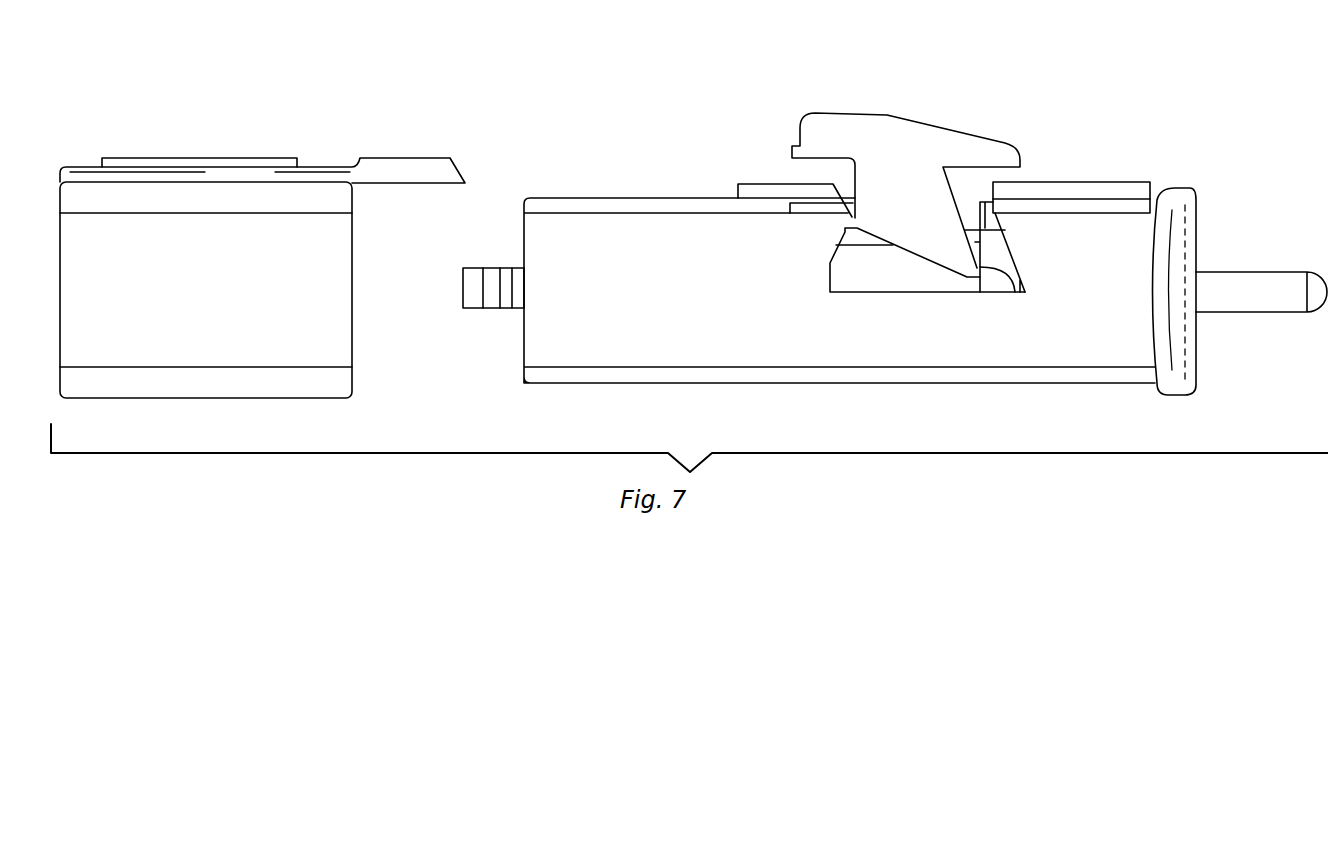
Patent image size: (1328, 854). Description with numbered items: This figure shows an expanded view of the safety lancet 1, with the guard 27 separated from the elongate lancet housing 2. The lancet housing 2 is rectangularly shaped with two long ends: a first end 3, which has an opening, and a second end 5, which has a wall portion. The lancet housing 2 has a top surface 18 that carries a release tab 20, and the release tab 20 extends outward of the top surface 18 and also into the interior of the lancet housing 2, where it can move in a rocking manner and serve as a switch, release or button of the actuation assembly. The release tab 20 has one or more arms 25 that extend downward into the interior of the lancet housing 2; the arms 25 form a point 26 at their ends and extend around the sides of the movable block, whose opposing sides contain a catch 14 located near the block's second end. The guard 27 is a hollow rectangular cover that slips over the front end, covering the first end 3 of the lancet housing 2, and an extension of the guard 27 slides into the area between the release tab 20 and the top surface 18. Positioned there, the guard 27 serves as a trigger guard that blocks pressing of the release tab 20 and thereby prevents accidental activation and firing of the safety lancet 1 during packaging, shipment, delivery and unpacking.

The safety lancet 1 is at (987, 60).
The lancet housing 2 is at (635, 245).
The first end 3 is at (524, 230).
The second end 5 is at (1196, 233).
The catch 14 is at (988, 280).
The top surface 18 is at (1115, 182).
The release tab 20 is at (890, 145).
The arms 25 is at (900, 198).
The point 26 is at (970, 267).
The guard 27 is at (161, 117).